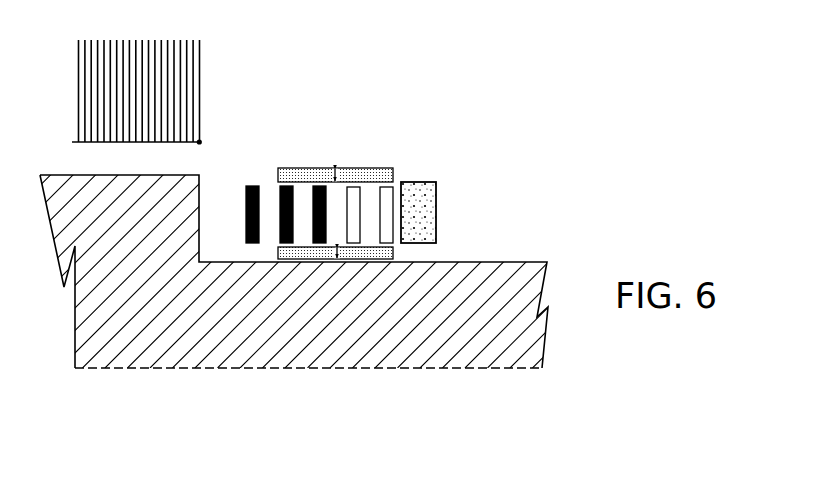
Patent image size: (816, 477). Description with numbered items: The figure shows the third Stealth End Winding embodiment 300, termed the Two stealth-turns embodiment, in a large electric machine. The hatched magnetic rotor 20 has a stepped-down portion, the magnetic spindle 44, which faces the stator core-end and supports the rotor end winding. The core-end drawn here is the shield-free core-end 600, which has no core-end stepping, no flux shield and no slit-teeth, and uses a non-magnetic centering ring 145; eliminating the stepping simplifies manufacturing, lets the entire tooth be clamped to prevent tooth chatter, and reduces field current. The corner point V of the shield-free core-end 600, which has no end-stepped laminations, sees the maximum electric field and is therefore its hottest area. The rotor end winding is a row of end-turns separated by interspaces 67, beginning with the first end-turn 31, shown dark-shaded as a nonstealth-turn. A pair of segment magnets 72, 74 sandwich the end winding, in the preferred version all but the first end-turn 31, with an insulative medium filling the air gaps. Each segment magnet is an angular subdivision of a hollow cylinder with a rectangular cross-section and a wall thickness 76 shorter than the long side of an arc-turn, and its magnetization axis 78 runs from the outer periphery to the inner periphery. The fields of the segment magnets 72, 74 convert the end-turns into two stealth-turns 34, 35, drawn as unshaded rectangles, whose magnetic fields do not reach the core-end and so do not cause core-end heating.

The magnetic rotor 20 is at (75, 322).
The magnetic spindle 44 is at (367, 363).
The shield-free core-end 600 is at (67, 123).
The corner point V is at (199, 145).
The third Stealth End Winding embodiment 300 is at (387, 176).
The segment magnet 74 is at (290, 170).
The magnetization axis 78 is at (336, 170).
The wall thickness 76 is at (395, 177).
The segment magnet 72 is at (280, 254).
The first end-turn 31 is at (243, 211).
The interspaces 67 is at (270, 197).
The stealth-turn 34 is at (347, 198).
The stealth-turn 35 is at (380, 200).
The non-magnetic centering ring 145 is at (436, 213).